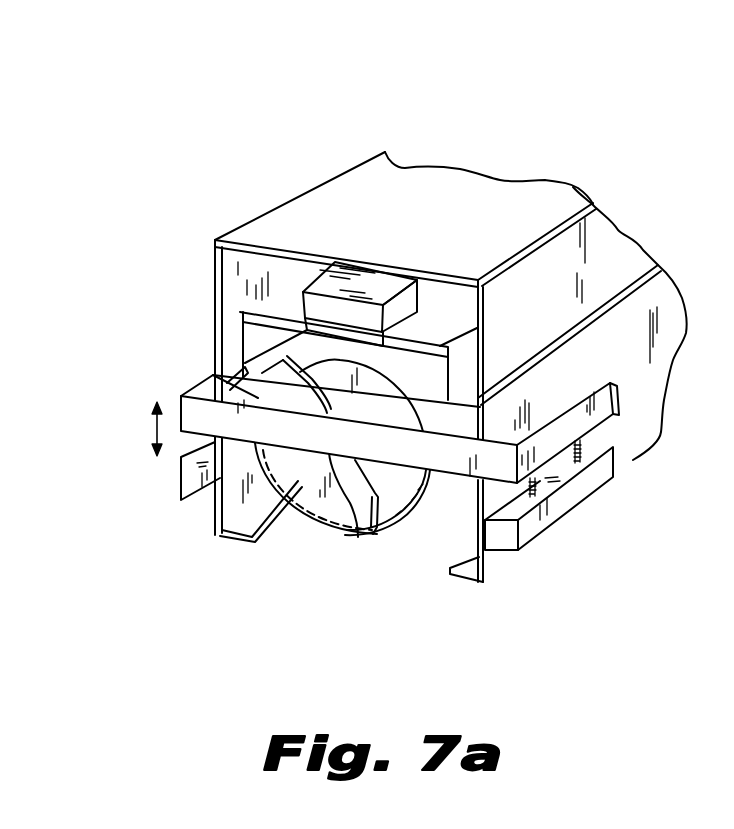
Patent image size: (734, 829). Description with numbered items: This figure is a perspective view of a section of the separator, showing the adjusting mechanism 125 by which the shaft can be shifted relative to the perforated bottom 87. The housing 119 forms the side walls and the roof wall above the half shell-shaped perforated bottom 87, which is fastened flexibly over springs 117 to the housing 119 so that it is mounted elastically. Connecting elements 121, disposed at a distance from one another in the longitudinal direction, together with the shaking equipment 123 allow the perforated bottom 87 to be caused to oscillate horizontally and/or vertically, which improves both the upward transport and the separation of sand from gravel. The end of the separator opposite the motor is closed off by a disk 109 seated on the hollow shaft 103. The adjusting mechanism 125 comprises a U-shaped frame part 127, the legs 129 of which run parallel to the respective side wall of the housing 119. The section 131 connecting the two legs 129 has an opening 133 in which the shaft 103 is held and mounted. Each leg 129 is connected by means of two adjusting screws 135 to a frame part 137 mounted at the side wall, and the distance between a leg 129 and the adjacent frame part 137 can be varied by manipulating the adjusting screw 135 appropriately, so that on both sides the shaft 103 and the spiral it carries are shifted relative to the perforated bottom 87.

The perforated bottom 87 is at (402, 525).
The hollow shaft 103 is at (345, 449).
The disk 109 is at (292, 507).
The springs 117 is at (230, 380).
The housing 119 is at (498, 197).
The connecting elements 121 is at (445, 314).
The shaking equipment 123 is at (333, 283).
The adjusting mechanism 125 is at (174, 391).
The U-shaped frame part 127 is at (615, 393).
The legs 129 is at (553, 437).
The section 131 is at (242, 423).
The opening 133 is at (323, 520).
The adjusting screws 135 is at (548, 480).
The frame parts 137 is at (528, 527).